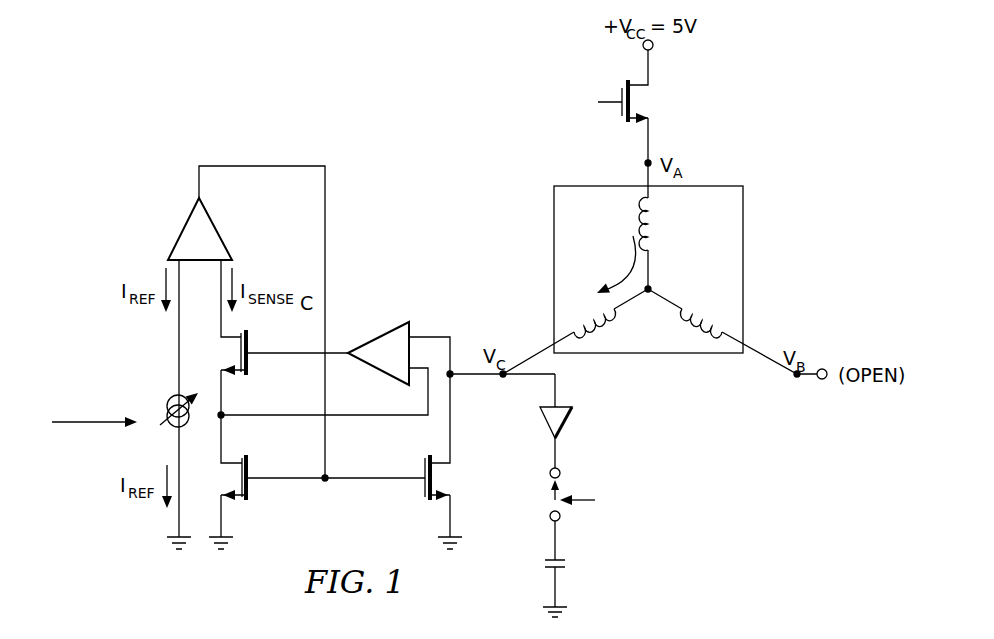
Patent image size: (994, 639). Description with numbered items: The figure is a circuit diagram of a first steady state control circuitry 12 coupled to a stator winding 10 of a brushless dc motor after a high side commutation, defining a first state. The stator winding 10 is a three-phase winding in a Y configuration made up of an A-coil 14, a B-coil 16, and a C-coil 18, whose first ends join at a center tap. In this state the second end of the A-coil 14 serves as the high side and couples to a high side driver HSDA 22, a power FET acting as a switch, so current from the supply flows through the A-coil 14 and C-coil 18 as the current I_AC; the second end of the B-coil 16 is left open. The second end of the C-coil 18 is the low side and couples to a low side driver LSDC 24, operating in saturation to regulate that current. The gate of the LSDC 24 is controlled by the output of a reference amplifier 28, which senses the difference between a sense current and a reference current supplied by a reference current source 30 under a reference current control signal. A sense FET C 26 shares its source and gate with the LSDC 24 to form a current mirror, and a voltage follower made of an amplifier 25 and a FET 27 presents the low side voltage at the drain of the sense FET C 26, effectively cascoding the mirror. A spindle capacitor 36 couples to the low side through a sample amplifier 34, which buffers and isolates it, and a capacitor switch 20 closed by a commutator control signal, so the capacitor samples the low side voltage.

The stator winding 10 is at (743, 270).
The first steady state control circuitry 12 is at (787, 93).
The A-coil 14 is at (640, 222).
The B-coil 16 is at (708, 312).
The C-coil 18 is at (583, 318).
The capacitor switch 20 is at (547, 493).
The high side driver A (HSDA) 22 is at (622, 92).
The low side driver C (LSDC) 24 is at (418, 490).
The amplifier 25 is at (378, 333).
The sense FET C 26 is at (252, 490).
The FET 27 is at (252, 340).
The reference amplifier 28 is at (184, 228).
The reference current source 30 is at (172, 396).
The sample amplifier 34 is at (566, 420).
The spindle capacitor 36 is at (545, 563).